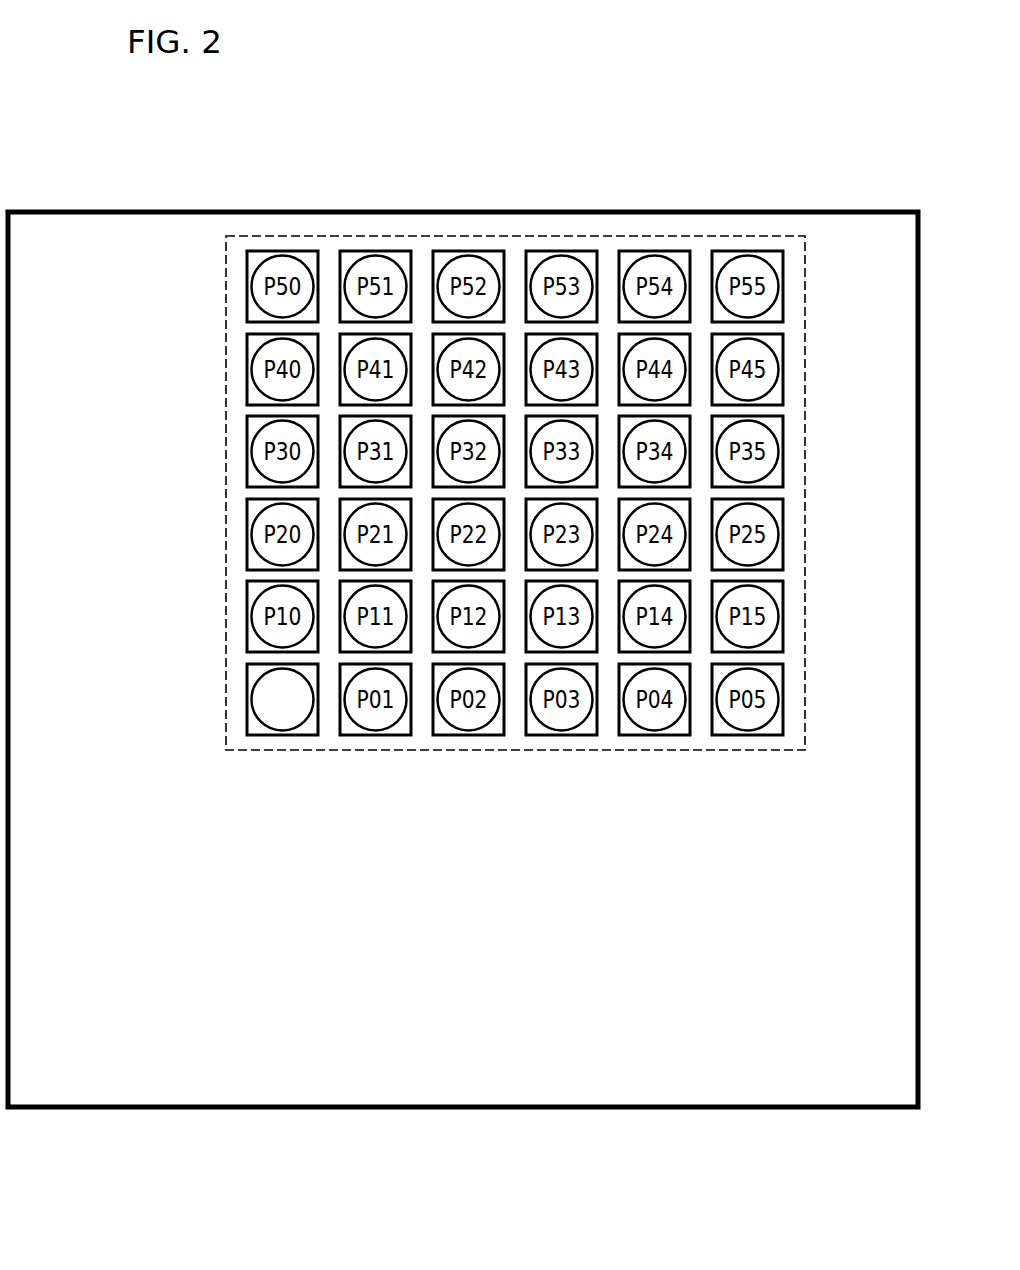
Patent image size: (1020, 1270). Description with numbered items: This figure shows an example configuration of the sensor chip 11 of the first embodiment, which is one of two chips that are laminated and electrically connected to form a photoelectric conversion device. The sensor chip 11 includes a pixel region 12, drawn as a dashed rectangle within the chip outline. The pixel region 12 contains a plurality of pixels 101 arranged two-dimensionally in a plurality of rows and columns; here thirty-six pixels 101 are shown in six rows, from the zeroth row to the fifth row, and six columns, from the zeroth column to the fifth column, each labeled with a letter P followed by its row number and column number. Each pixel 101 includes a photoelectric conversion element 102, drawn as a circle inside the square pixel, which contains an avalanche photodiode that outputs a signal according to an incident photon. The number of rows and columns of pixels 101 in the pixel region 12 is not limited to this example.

The sensor chip 11 is at (848, 210).
The pixel region 12 is at (513, 236).
The pixel 101 is at (248, 714).
The photoelectric conversion element 102 is at (282, 717).